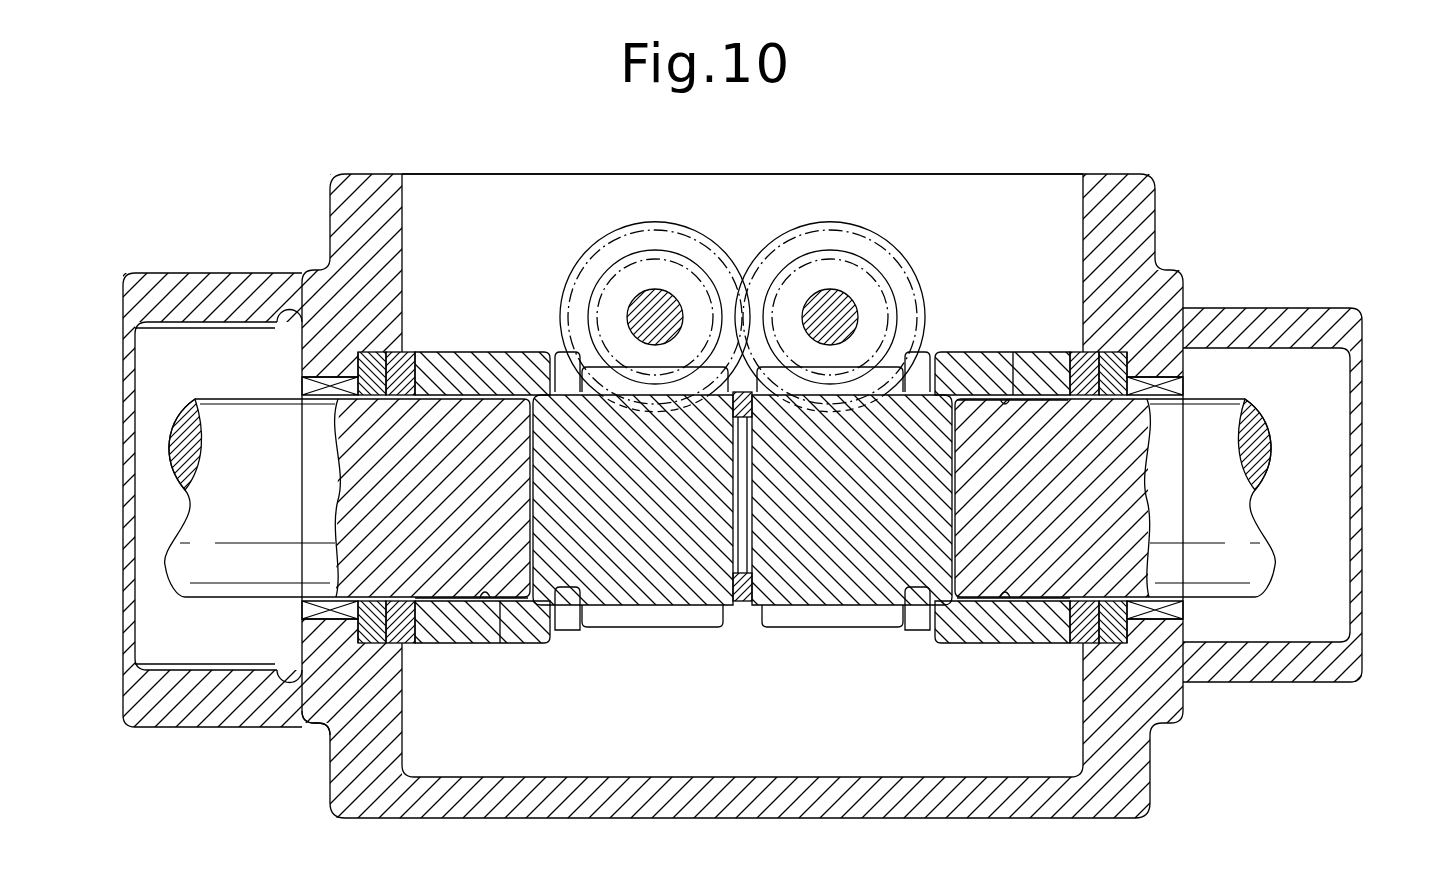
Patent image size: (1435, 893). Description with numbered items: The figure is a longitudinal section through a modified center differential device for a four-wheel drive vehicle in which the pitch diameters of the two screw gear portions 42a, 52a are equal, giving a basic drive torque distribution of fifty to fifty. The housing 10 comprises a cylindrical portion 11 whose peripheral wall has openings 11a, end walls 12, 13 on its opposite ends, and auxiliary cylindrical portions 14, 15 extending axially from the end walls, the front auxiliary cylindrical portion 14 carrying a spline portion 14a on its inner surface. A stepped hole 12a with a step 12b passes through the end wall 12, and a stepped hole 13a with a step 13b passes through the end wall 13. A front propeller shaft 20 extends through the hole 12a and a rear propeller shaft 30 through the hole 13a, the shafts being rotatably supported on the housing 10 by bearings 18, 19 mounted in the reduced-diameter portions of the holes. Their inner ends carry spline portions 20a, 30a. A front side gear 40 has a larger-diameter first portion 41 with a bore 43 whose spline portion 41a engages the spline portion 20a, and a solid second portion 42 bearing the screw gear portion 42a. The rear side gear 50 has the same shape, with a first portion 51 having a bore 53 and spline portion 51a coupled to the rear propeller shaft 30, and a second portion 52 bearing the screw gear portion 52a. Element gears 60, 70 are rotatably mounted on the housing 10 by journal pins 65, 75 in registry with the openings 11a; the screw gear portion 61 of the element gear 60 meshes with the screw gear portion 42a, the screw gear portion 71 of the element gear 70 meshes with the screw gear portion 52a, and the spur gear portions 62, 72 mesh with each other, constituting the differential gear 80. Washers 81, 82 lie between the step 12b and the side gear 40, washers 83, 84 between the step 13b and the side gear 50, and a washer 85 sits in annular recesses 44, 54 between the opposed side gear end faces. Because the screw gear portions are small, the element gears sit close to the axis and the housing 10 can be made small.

The housing 10 is at (962, 163).
The cylindrical portion 11 is at (730, 818).
The opening 11a is at (413, 190).
The end wall 12 is at (330, 218).
The stepped hole 12a is at (335, 387).
The step 12b is at (360, 363).
The end wall 13 is at (1153, 222).
The stepped hole 13a is at (1165, 390).
The step 13b is at (1183, 356).
The auxiliary cylindrical portion 14 is at (196, 272).
The spline portion 14a is at (183, 325).
The auxiliary cylindrical portion 15 is at (1265, 307).
The bearing 18 is at (300, 612).
The bearing 19 is at (1180, 612).
The front propeller shaft 20 is at (178, 533).
The spline portion 20a is at (438, 603).
The rear propeller shaft 30 is at (1240, 528).
The spline portion 30a is at (1040, 603).
The front side gear 40 is at (552, 647).
The first portion 41 is at (478, 647).
The spline portion 41a is at (510, 603).
The second portion 42 is at (660, 630).
The screw gear portion 42a is at (612, 628).
The bore 43 is at (458, 402).
The annular recess 44 is at (738, 600).
The rear side gear 50 is at (877, 647).
The first portion 51 is at (957, 647).
The spline portion 51a is at (1000, 603).
The second portion 52 is at (800, 630).
The screw gear portion 52a is at (778, 628).
The bore 53 is at (1000, 402).
The annular recess 54 is at (770, 602).
The front element gear 60 is at (566, 277).
The screw gear portion 61 is at (695, 295).
The spur gear portion 62 is at (612, 240).
The journal pin 65 is at (640, 322).
The rear element gear 70 is at (920, 270).
The screw gear portion 71 is at (803, 262).
The spur gear portion 72 is at (870, 233).
The journal pin 75 is at (855, 318).
The differential gear 80 is at (789, 211).
The washer 81 is at (330, 733).
The washer 82 is at (400, 644).
The washer 83 is at (1110, 643).
The washer 84 is at (1075, 644).
The washer 85 is at (745, 605).